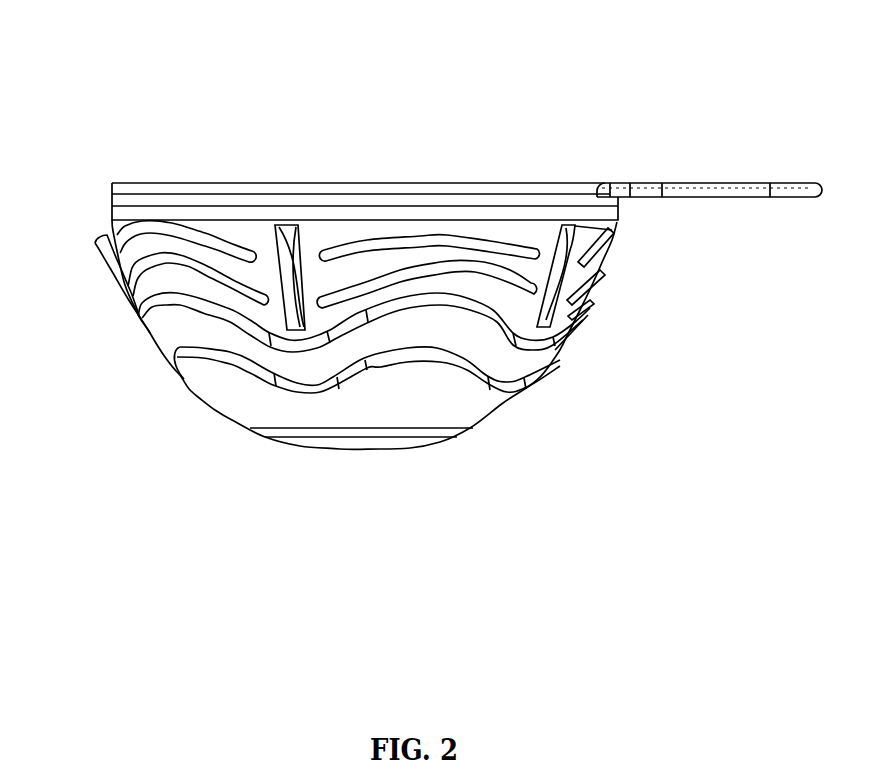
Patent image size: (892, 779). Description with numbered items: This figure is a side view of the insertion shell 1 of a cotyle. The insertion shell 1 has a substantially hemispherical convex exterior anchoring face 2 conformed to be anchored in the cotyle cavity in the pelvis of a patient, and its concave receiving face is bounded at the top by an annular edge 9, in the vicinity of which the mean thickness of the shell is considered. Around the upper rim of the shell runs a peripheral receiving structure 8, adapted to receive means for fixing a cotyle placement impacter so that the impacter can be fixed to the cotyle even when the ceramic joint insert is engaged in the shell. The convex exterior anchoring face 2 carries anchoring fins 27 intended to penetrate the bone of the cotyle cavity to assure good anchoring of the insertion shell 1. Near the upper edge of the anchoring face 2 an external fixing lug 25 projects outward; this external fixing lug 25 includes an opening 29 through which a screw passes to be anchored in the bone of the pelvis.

The insertion shell 1 is at (583, 353).
The convex exterior anchoring face 2 is at (585, 298).
The peripheral receiving structure 8 is at (100, 205).
The annular edge 9 is at (123, 187).
The external fixing lug 25 is at (775, 180).
The anchoring fins 27 is at (95, 242).
The opening 29 is at (720, 187).